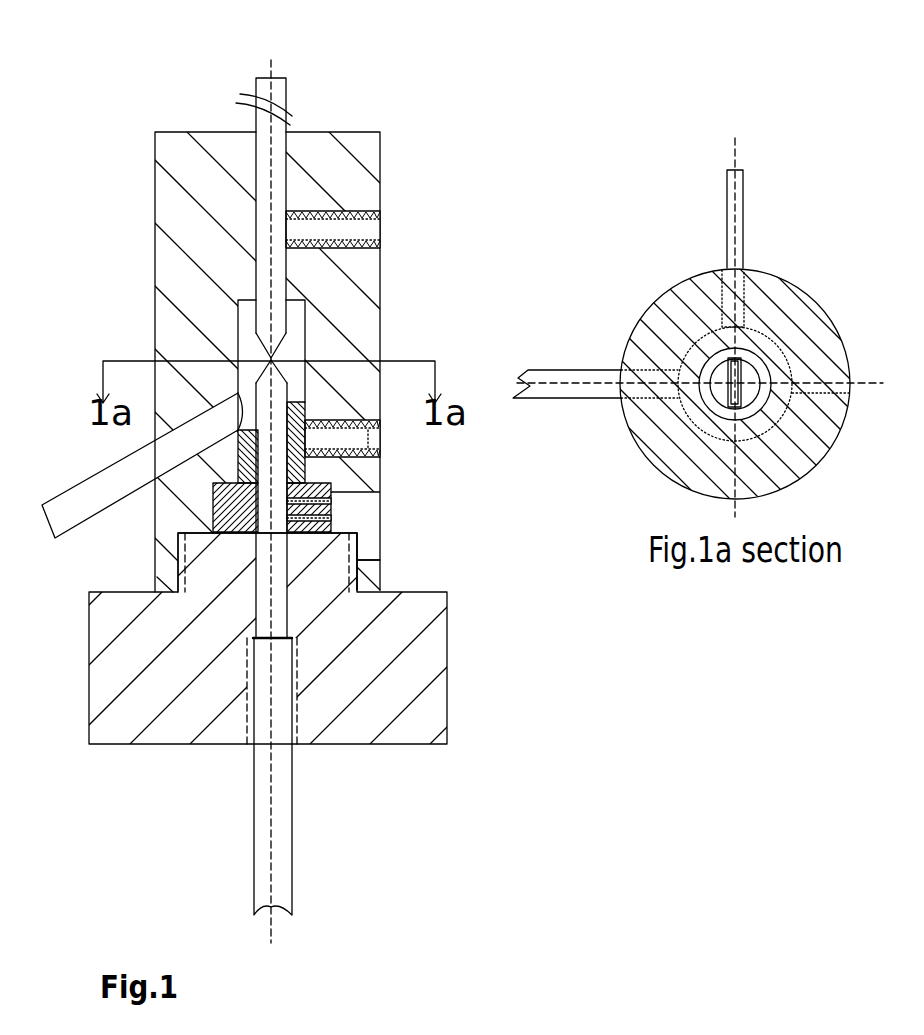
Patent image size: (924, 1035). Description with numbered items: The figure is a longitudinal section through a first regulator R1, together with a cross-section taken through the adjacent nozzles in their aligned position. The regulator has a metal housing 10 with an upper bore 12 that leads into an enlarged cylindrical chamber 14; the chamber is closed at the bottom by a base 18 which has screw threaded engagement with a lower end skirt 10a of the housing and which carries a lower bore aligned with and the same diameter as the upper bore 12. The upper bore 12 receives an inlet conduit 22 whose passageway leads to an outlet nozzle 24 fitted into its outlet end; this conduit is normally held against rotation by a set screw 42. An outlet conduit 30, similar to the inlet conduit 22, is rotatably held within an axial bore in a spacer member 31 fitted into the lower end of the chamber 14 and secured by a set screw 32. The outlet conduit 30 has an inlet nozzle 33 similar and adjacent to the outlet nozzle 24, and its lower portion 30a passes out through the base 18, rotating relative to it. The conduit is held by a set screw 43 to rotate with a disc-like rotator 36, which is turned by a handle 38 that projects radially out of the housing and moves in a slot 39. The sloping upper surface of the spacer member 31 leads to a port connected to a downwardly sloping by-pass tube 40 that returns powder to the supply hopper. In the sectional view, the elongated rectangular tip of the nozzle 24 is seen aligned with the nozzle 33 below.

In FIG. 1, the housing 10 is at (183, 157).
In FIG. 1, the lower end skirt 10a is at (357, 562).
In FIG. 1, the upper bore 12 is at (272, 158).
In FIG. 1, the cylindrical chamber 14 is at (296, 322).
In FIG. 1, the base 18 is at (392, 712).
In FIG. 1, the inlet conduit 22 is at (267, 88).
In FIG. 1, the outlet nozzle 24 is at (238, 360).
In FIG. 1A, the outlet nozzle 24 is at (743, 363).
In FIG. 1, the outlet conduit 30 is at (310, 592).
In FIG. 1, the lower portion of outlet conduit 30a is at (263, 790).
In FIG. 1, the spacer member 31 is at (240, 470).
In FIG. 1, the set screw 32 is at (353, 439).
In FIG. 1, the inlet nozzle 33 is at (265, 372).
In FIG. 1, the rotator 36 is at (230, 533).
In FIG. 1A, the handle 38 is at (741, 193).
In FIG. 1, the slot 39 is at (333, 528).
In FIG. 1, the by-pass tube 40 is at (105, 493).
In FIG. 1A, the by-pass tube 40 is at (573, 385).
In FIG. 1, the set screw 42 is at (343, 235).
In FIG. 1, the set screw 43 is at (331, 510).
In FIG. 1, the first regulator R1 is at (400, 195).